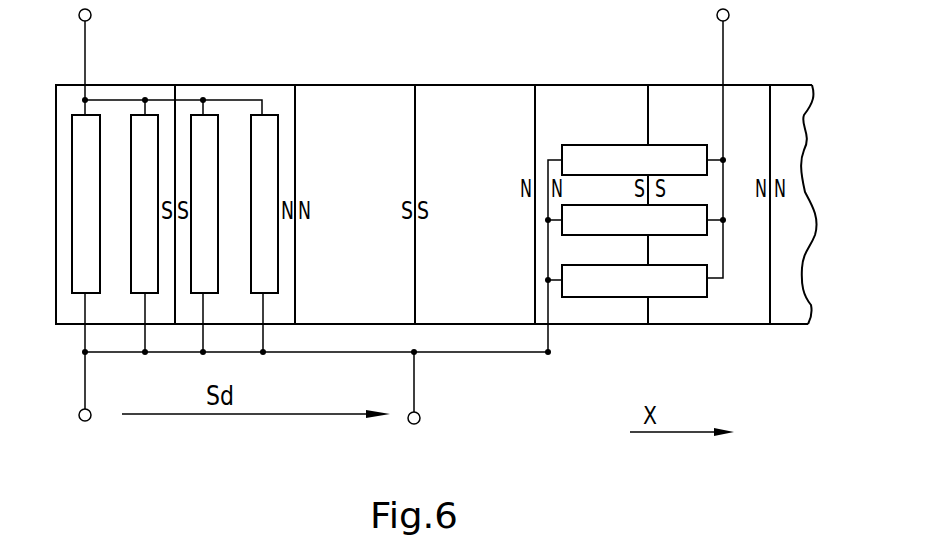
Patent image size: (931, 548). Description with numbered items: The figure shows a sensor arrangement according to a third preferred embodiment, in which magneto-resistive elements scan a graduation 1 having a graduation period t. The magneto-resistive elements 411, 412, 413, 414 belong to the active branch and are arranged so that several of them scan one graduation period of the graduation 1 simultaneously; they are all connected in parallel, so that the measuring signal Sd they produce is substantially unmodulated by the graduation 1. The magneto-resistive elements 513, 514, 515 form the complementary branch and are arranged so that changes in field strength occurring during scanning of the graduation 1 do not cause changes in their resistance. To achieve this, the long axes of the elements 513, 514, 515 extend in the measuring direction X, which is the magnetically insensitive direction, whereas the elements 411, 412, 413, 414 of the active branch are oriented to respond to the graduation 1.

The graduation 1 is at (787, 96).
The magneto-resistive element 411 is at (89, 123).
The magneto-resistive element 412 is at (152, 128).
The magneto-resistive element 413 is at (208, 126).
The magneto-resistive element 414 is at (262, 125).
The magneto-resistive element 513 is at (604, 153).
The magneto-resistive element 514 is at (580, 228).
The magneto-resistive element 515 is at (686, 286).